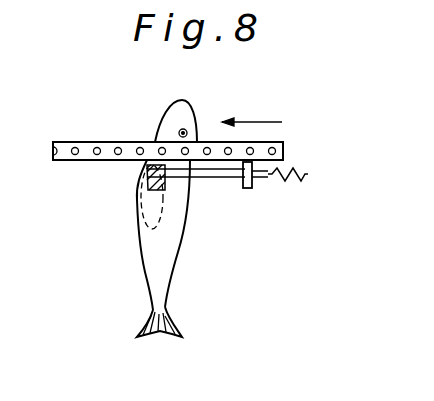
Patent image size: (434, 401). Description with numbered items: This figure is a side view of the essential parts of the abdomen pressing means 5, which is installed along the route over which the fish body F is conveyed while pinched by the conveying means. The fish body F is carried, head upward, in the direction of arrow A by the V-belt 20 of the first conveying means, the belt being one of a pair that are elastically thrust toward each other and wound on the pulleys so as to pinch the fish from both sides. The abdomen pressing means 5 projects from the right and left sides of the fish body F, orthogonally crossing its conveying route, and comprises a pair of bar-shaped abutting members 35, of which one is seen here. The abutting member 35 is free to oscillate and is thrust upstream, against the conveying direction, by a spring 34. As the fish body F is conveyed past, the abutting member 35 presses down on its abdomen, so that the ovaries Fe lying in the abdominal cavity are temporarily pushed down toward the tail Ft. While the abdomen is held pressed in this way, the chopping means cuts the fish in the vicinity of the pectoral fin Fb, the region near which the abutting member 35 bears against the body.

The V-belt 20 is at (126, 143).
The arrow (conveying direction) A is at (250, 122).
The pectoral fin Fb is at (150, 182).
The ovaries Fe is at (142, 212).
The tail Ft is at (153, 280).
The fish body F is at (170, 257).
The abutting member 35 is at (213, 178).
The abdomen pressing means 5 is at (243, 229).
The spring 34 is at (303, 201).